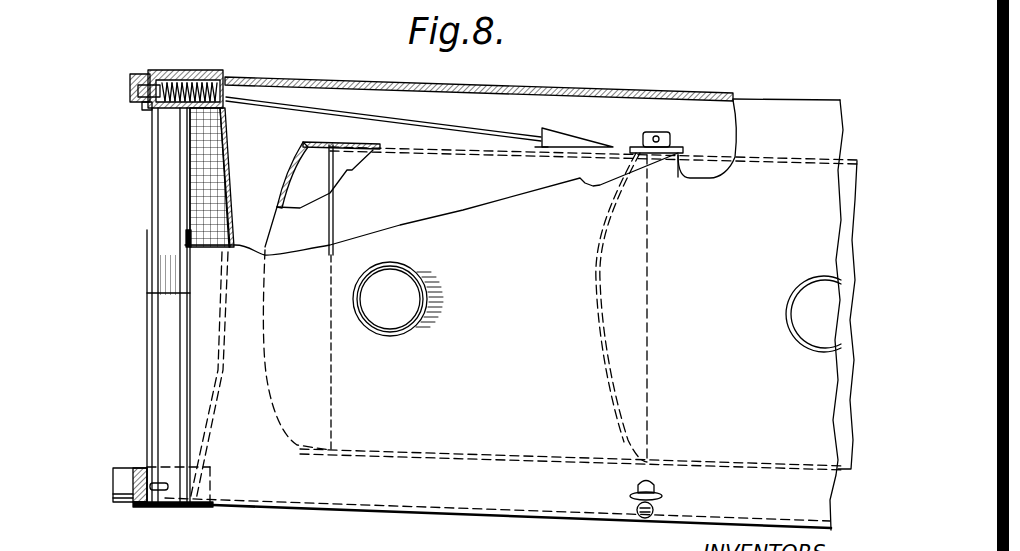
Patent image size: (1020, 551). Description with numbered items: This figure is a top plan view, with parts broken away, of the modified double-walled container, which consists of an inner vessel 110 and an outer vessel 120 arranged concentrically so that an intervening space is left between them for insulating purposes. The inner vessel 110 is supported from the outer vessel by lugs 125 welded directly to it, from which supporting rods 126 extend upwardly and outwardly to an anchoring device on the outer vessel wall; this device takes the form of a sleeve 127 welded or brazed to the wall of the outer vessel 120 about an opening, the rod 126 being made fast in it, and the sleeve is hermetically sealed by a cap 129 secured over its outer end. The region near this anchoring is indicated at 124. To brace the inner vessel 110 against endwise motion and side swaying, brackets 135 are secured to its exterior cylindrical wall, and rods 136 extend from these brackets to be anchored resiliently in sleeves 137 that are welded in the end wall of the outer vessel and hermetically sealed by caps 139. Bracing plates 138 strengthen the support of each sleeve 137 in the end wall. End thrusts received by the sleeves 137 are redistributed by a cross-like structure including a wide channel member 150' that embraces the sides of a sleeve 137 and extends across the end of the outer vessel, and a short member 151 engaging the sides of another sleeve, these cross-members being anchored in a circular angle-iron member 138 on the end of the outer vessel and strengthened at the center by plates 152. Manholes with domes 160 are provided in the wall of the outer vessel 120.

The inner vessel 110 is at (327, 136).
The outer vessel 120 is at (369, 80).
The bracket flange 124 is at (679, 178).
The lug 125 is at (673, 151).
The supporting rod 126 is at (657, 135).
The sleeve 127 is at (656, 490).
The cap 129 is at (655, 514).
The bracket 135 is at (553, 131).
The rod 136 is at (467, 128).
The sleeve 137 is at (226, 80).
The bracing plate 138 is at (197, 72).
The cap 139 is at (137, 78).
The channel member 150' is at (142, 366).
The short member 151 is at (160, 190).
The plate 152 is at (185, 322).
The manhole dome 160 is at (402, 277).